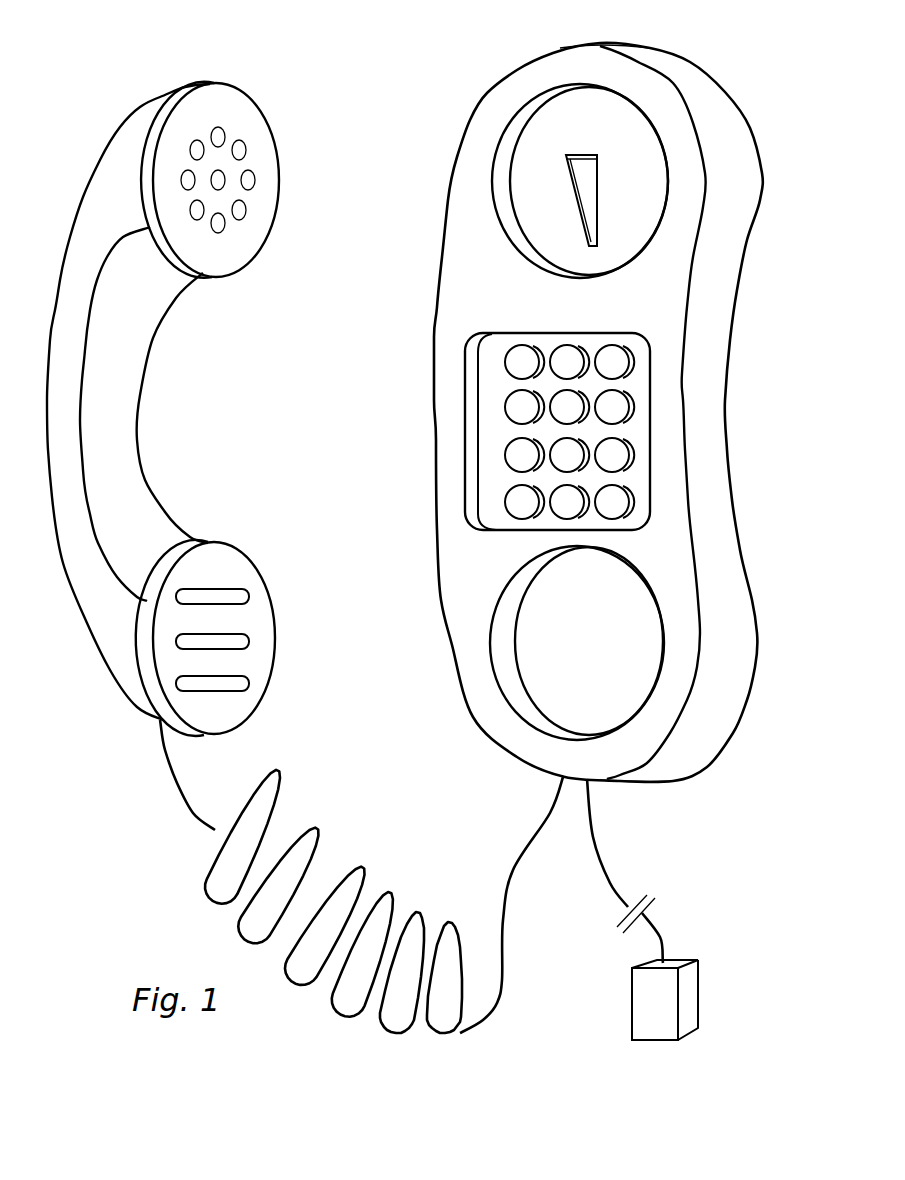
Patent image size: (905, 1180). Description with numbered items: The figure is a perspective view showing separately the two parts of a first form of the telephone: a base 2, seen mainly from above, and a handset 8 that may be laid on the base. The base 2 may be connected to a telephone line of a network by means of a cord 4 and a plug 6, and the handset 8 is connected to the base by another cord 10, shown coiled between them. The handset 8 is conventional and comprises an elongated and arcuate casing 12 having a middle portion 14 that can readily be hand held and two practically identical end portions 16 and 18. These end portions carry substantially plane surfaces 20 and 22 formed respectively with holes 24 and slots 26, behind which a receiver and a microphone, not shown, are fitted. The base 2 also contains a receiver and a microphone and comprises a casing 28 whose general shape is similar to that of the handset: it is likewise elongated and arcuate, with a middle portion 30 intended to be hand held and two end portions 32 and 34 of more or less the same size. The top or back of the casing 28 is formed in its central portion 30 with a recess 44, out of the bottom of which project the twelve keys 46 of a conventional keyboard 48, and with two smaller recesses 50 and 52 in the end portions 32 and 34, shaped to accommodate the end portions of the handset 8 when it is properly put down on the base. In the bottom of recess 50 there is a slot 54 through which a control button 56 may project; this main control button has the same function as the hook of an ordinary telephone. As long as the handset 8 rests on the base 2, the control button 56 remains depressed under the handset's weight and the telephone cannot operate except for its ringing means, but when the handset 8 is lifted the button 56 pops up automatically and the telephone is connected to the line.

The base 2 is at (425, 412).
The cord 4 is at (603, 865).
The plug 6 is at (647, 1017).
The handset 8 is at (158, 385).
The cord 10 is at (350, 867).
The casing 12 is at (80, 552).
The middle portion 14 is at (130, 430).
The end portion 16 is at (133, 148).
The end portion 18 is at (110, 653).
The plane surface 20 is at (232, 98).
The plane surface 22 is at (172, 663).
The holes 24 is at (223, 128).
The slots 26 is at (250, 598).
The casing 28 is at (473, 617).
The middle portion 30 is at (705, 417).
The end portion 32 is at (708, 138).
The end portion 34 is at (695, 727).
The recess 44 is at (467, 370).
The keys 46 is at (548, 463).
The keyboard 48 is at (505, 333).
The recess 50 is at (517, 130).
The recess 52 is at (530, 710).
The slot 54 is at (598, 212).
The control button 56 is at (588, 183).